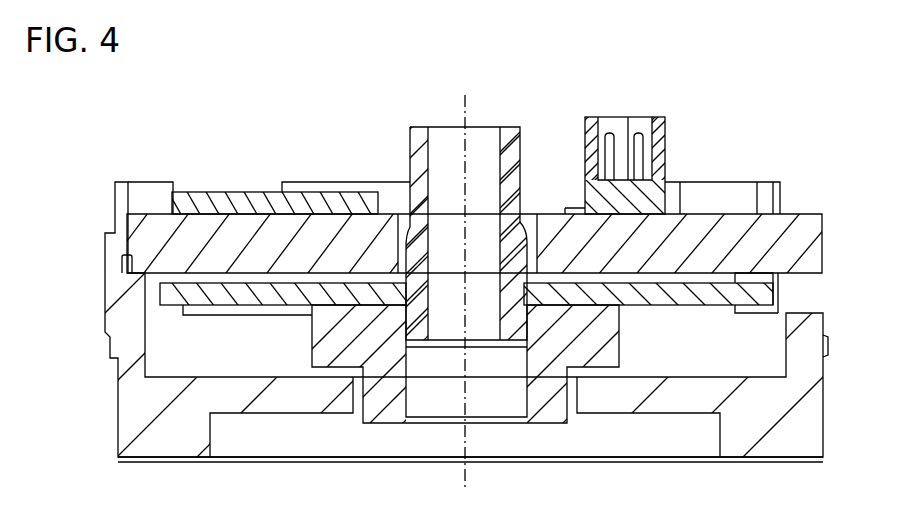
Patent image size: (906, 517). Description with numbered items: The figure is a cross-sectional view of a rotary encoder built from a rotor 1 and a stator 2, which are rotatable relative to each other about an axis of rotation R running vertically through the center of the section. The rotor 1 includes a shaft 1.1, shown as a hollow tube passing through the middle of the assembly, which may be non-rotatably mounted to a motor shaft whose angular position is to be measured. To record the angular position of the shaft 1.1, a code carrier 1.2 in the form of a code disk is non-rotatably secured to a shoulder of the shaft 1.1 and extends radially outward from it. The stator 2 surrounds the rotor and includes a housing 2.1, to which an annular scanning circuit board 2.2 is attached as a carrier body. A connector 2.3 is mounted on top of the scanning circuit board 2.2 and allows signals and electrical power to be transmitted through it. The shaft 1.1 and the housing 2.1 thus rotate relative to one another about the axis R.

The rotor 1 is at (458, 253).
The shaft 1.1 is at (495, 130).
The code carrier 1.2 is at (262, 297).
The stator 2 is at (118, 406).
The housing 2.1 is at (127, 440).
The scanning circuit board 2.2 is at (812, 232).
The connector 2.3 is at (666, 128).
The axis of rotation R is at (462, 118).